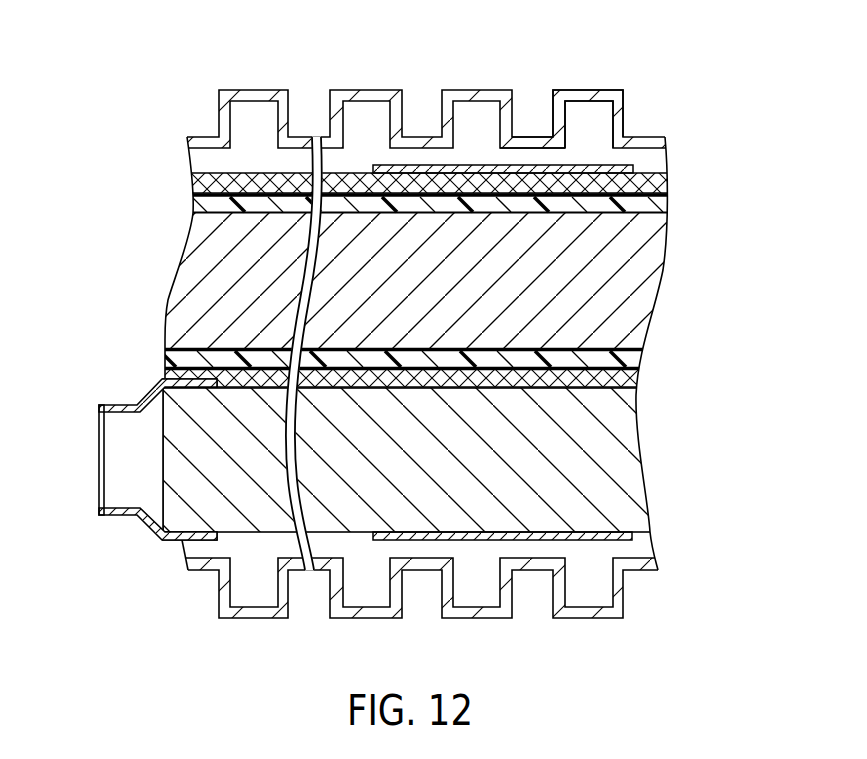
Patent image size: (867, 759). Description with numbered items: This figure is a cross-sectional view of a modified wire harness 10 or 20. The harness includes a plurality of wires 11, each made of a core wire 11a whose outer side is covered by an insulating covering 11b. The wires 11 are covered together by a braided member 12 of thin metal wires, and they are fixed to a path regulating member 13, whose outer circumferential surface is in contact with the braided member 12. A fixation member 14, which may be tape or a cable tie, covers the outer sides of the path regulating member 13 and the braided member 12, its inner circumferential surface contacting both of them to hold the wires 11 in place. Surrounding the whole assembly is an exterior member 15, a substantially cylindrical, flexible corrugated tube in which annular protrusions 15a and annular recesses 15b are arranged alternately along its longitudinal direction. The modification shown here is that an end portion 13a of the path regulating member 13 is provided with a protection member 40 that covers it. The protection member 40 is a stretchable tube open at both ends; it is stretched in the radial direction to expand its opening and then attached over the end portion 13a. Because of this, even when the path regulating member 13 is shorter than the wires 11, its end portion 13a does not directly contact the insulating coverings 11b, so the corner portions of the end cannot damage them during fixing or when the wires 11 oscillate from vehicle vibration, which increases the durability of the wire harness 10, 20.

The wire harness 10 is at (417, 330).
The wire harness 20 is at (417, 330).
The wire 11 is at (468, 282).
The core wire 11a is at (635, 305).
The insulating covering 11b is at (663, 203).
The braided member 12 is at (665, 188).
The path regulating member 13 is at (625, 437).
The end portion 13a is at (167, 412).
The fixation member 14 is at (635, 537).
The exterior member 15 is at (436, 98).
The annular protrusion 15a is at (587, 93).
The annular recess 15b is at (535, 137).
The protection member 40 is at (108, 403).